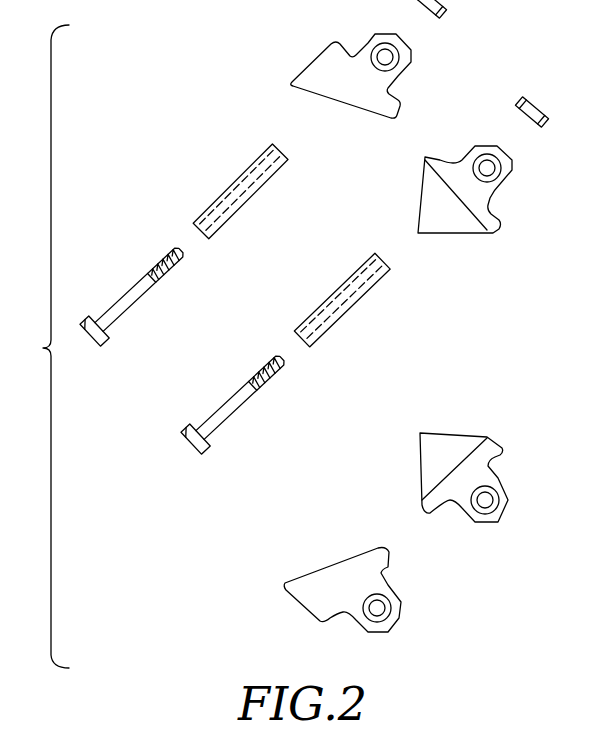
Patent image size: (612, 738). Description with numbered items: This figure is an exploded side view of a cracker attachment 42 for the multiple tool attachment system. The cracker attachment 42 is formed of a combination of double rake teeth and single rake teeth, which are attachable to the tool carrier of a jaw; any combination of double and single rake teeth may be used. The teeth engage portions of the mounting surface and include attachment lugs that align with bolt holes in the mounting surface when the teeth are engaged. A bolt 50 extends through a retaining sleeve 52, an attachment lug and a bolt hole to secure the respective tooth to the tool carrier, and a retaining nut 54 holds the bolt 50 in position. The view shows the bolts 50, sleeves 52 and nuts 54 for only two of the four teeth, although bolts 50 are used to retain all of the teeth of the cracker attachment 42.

The cracker attachment 42 is at (39, 346).
The bolt 50 is at (140, 279).
The retaining sleeve 52 is at (240, 180).
The retaining nut 54 is at (532, 101).